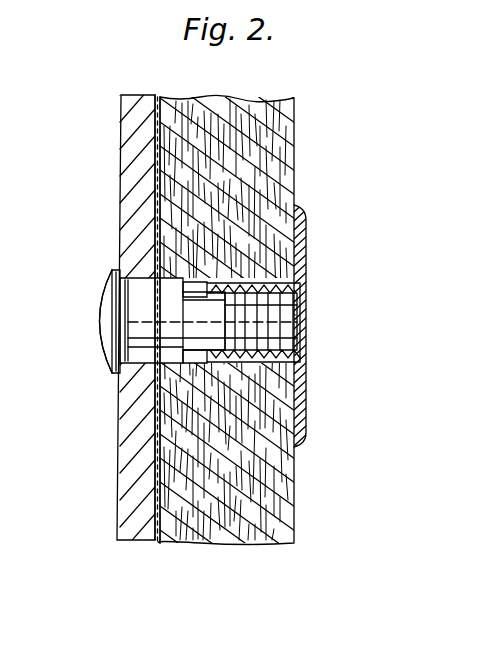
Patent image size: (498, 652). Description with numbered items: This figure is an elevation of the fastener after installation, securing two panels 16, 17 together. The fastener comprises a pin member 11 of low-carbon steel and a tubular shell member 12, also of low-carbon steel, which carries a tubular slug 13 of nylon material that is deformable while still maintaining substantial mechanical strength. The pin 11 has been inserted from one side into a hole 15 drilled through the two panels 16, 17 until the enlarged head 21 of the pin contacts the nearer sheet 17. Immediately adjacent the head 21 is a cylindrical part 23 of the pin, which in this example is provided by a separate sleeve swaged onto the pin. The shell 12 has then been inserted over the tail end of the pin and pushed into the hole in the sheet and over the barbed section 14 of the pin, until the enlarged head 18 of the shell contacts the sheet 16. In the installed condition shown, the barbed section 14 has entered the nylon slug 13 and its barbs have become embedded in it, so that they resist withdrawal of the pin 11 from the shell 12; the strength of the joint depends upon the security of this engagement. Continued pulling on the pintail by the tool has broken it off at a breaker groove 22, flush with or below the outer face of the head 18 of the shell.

The pin member 11 is at (95, 354).
The tubular shell member 12 is at (305, 374).
The tubular slug 13 is at (300, 296).
The barbed section 14 is at (265, 283).
The hole 15 is at (175, 360).
The panel 16 is at (222, 543).
The panel 17 is at (116, 517).
The enlarged head of the shell 18 is at (300, 424).
The enlarged head of the pin 21 is at (105, 299).
The breaker groove 22 is at (290, 319).
The cylindrical part 23 is at (140, 289).